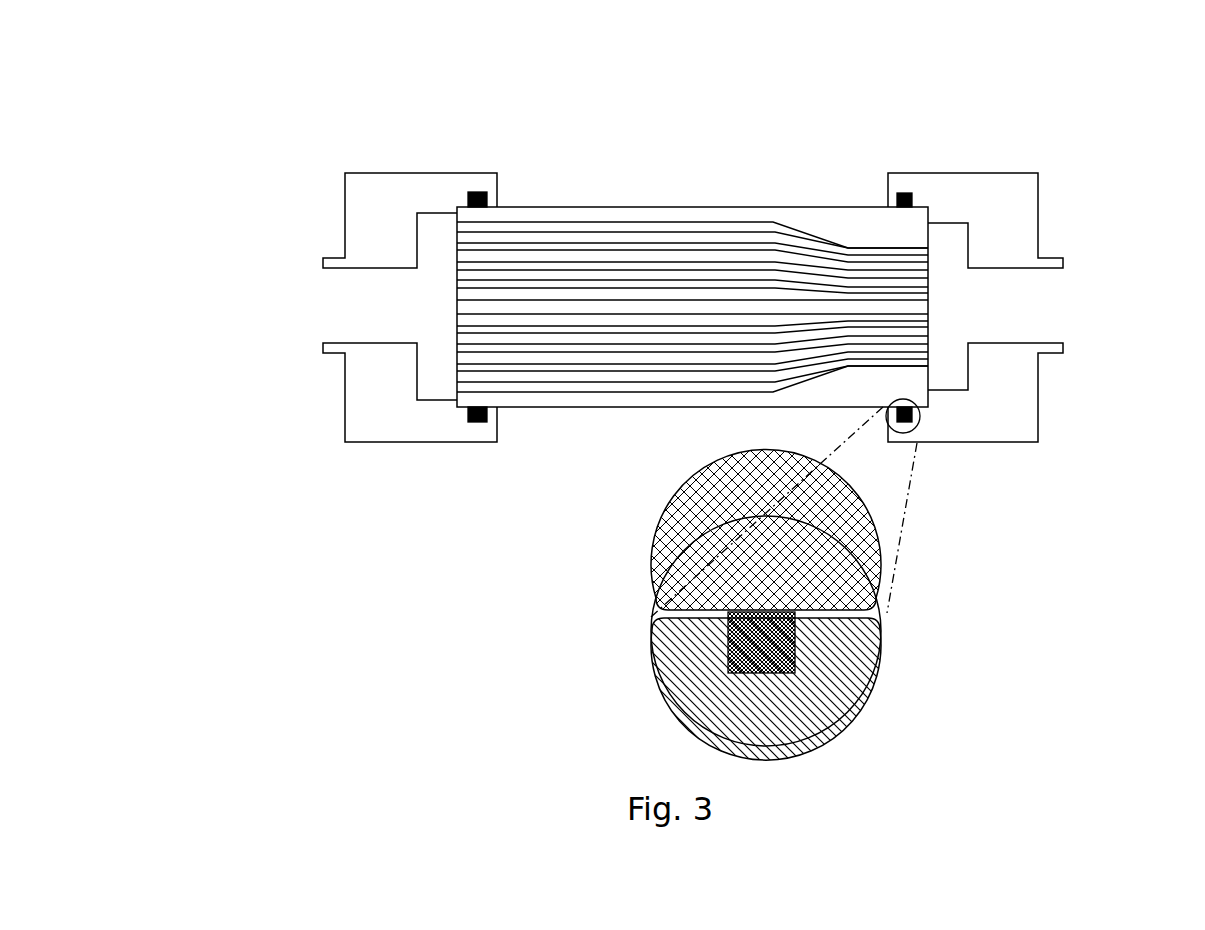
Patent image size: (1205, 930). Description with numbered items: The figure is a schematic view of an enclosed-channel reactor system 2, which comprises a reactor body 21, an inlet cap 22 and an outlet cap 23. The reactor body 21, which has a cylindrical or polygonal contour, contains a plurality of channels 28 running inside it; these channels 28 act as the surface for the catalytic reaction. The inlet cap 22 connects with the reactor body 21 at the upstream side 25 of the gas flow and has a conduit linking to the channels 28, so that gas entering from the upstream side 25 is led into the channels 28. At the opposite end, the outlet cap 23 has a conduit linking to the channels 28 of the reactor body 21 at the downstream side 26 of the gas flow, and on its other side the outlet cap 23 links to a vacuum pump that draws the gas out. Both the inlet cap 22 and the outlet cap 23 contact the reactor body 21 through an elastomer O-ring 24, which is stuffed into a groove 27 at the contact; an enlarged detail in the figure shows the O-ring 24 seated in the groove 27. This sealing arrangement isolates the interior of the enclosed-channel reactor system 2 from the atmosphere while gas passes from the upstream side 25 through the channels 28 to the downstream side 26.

The enclosed-channel reactor system 2 is at (172, 18).
The reactor body 21 is at (657, 207).
The inlet cap 22 is at (403, 171).
The outlet cap 23 is at (1007, 172).
The elastomer O-ring 24 is at (798, 645).
The upstream side 25 is at (362, 306).
The downstream side 26 is at (993, 307).
The groove 27 is at (720, 668).
The channels 28 is at (780, 223).